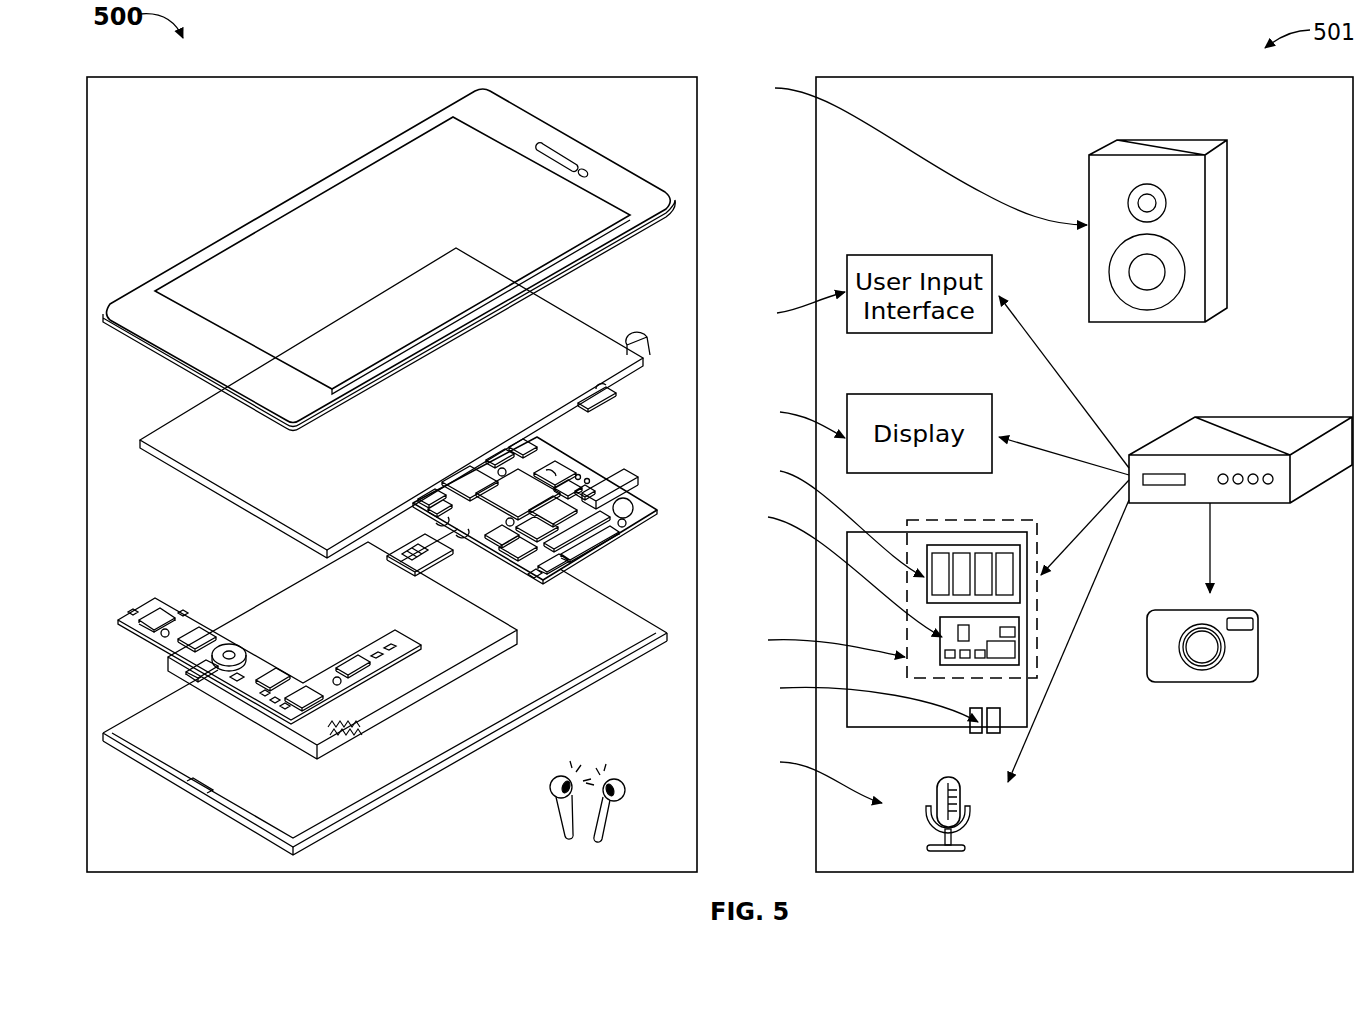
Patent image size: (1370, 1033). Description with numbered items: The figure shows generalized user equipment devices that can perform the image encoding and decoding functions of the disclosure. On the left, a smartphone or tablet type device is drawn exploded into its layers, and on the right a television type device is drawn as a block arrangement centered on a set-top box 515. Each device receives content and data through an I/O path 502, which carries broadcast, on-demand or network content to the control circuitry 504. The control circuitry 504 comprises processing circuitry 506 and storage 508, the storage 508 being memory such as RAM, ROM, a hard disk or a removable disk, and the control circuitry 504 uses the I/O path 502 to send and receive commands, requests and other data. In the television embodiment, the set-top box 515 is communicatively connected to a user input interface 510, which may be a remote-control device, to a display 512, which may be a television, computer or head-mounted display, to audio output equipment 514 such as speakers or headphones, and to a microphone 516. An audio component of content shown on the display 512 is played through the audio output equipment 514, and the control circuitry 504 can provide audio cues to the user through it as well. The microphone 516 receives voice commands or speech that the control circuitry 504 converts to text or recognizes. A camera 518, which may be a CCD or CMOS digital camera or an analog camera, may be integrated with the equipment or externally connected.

The I/O path 502 is at (228, 660).
The control circuitry 504 is at (596, 547).
The processing circuitry 506 is at (586, 521).
The storage 508 is at (522, 488).
The user input interface 510 is at (566, 362).
The display 512 is at (634, 363).
The audio output equipment 514 is at (566, 152).
The set-top box 515 is at (1275, 417).
The microphone 516 is at (343, 683).
The camera 518 is at (600, 180).